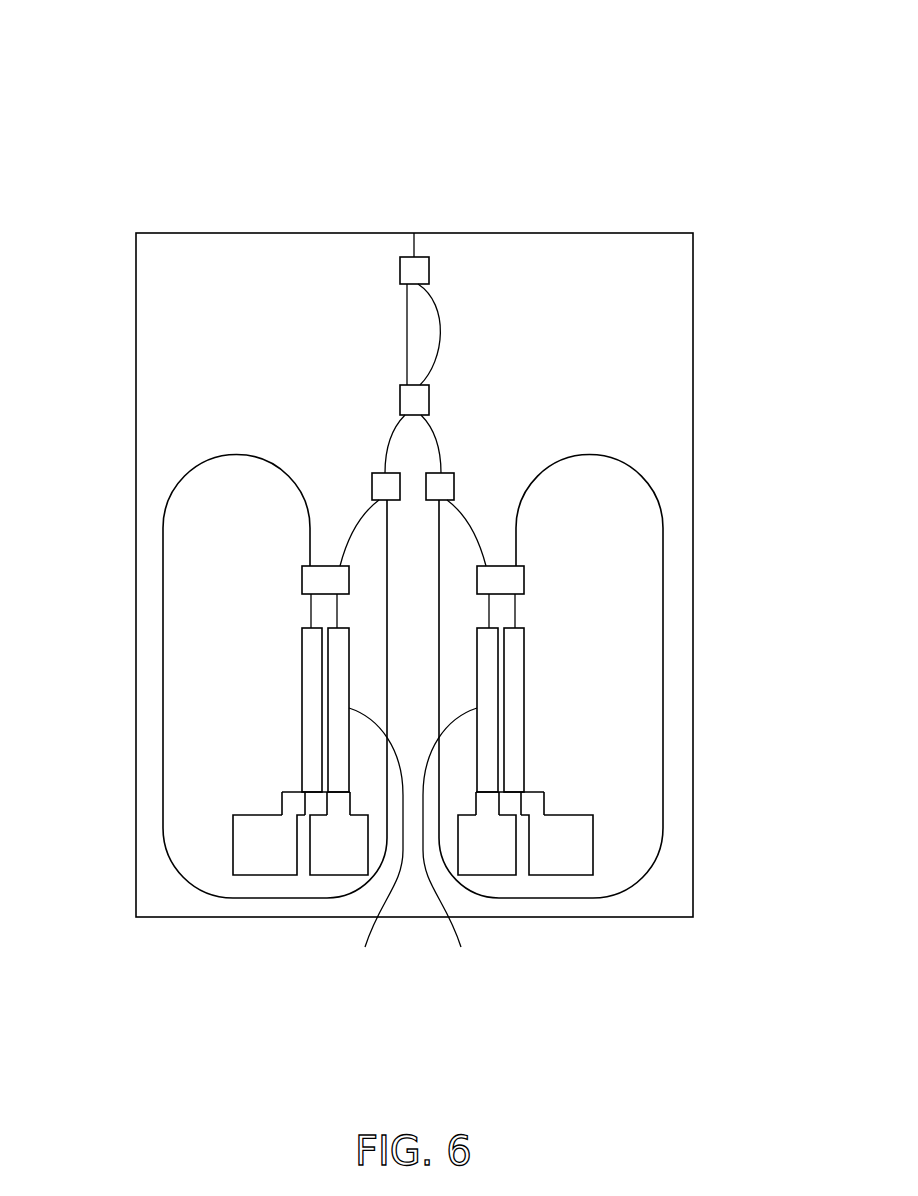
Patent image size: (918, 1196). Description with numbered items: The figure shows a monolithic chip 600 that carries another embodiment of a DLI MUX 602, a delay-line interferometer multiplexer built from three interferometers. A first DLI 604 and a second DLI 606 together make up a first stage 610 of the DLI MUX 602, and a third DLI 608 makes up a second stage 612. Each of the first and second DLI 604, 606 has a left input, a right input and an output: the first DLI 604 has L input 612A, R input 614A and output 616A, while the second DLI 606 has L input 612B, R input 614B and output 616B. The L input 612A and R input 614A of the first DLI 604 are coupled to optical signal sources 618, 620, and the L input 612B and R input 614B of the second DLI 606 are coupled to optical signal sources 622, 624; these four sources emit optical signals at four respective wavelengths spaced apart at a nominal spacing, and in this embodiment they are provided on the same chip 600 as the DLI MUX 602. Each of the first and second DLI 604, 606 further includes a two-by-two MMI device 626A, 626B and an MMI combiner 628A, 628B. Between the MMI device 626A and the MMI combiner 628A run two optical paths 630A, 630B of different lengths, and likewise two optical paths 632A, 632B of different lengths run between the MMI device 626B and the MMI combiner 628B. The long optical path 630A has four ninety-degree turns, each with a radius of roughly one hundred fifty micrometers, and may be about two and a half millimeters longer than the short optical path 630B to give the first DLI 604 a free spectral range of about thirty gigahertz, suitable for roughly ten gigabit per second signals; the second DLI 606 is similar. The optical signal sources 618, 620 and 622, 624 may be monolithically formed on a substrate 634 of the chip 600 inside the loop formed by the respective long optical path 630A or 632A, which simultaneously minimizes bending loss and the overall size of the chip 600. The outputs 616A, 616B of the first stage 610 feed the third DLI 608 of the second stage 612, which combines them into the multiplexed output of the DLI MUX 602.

The monolithic chip 600 is at (268, 105).
The DLI MUX 602 is at (560, 265).
The first DLI 604 is at (240, 427).
The second DLI 606 is at (573, 432).
The third DLI 608 is at (372, 318).
The first stage 610 is at (121, 445).
The second stage 612 is at (318, 253).
The L input 612A is at (310, 606).
The L input 612B is at (516, 604).
The R input 614A is at (307, 617).
The R input 614B is at (515, 620).
The output 616A is at (397, 427).
The output 616B is at (435, 432).
The optical signal source 618 is at (300, 750).
The optical signal source 620 is at (374, 845).
The optical signal source 622 is at (452, 845).
The optical signal source 624 is at (527, 750).
The 2x2 MMI device 626A is at (302, 577).
The 2x2 MMI device 626B is at (524, 578).
The MMI combiner 628A is at (376, 472).
The MMI combiner 628B is at (450, 472).
The long optical path 630A is at (163, 804).
The short optical path 630B is at (357, 522).
The long optical path 632A is at (663, 804).
The short optical path 632B is at (469, 522).
The substrate 634 is at (203, 283).